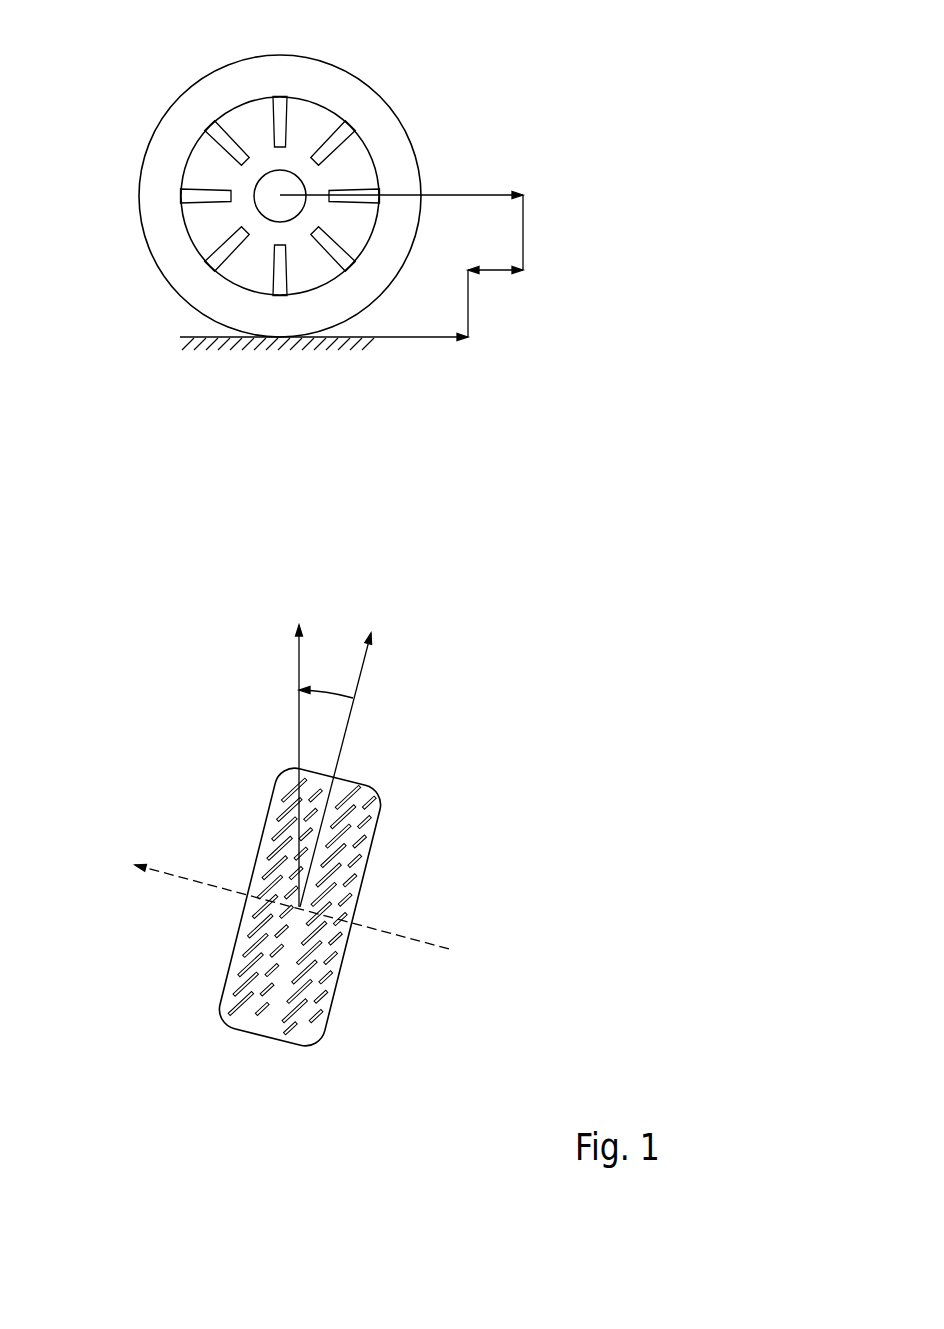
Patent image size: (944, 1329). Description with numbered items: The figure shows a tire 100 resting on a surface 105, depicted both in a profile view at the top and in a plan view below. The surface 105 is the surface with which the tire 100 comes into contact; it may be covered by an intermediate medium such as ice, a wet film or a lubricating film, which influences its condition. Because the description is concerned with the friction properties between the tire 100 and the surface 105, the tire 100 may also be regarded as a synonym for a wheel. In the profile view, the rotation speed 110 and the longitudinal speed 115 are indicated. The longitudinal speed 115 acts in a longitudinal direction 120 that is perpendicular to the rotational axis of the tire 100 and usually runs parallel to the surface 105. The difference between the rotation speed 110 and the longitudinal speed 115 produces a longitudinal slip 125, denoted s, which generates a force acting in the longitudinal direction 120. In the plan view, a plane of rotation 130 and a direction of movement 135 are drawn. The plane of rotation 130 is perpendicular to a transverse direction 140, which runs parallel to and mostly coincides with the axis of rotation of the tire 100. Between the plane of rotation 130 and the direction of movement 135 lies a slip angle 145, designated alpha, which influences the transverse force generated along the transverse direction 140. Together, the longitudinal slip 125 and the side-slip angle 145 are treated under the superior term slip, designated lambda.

The tire 100 is at (367, 118).
The surface 105 is at (310, 343).
The rotation speed 110 is at (417, 340).
The longitudinal speed 115 is at (473, 200).
The longitudinal direction 120 is at (467, 195).
The longitudinal slip 125 is at (523, 358).
The plane of rotation 130 is at (365, 673).
The direction of movement 135 is at (297, 673).
The transverse direction 140 is at (197, 882).
The slip angle 145 is at (358, 615).